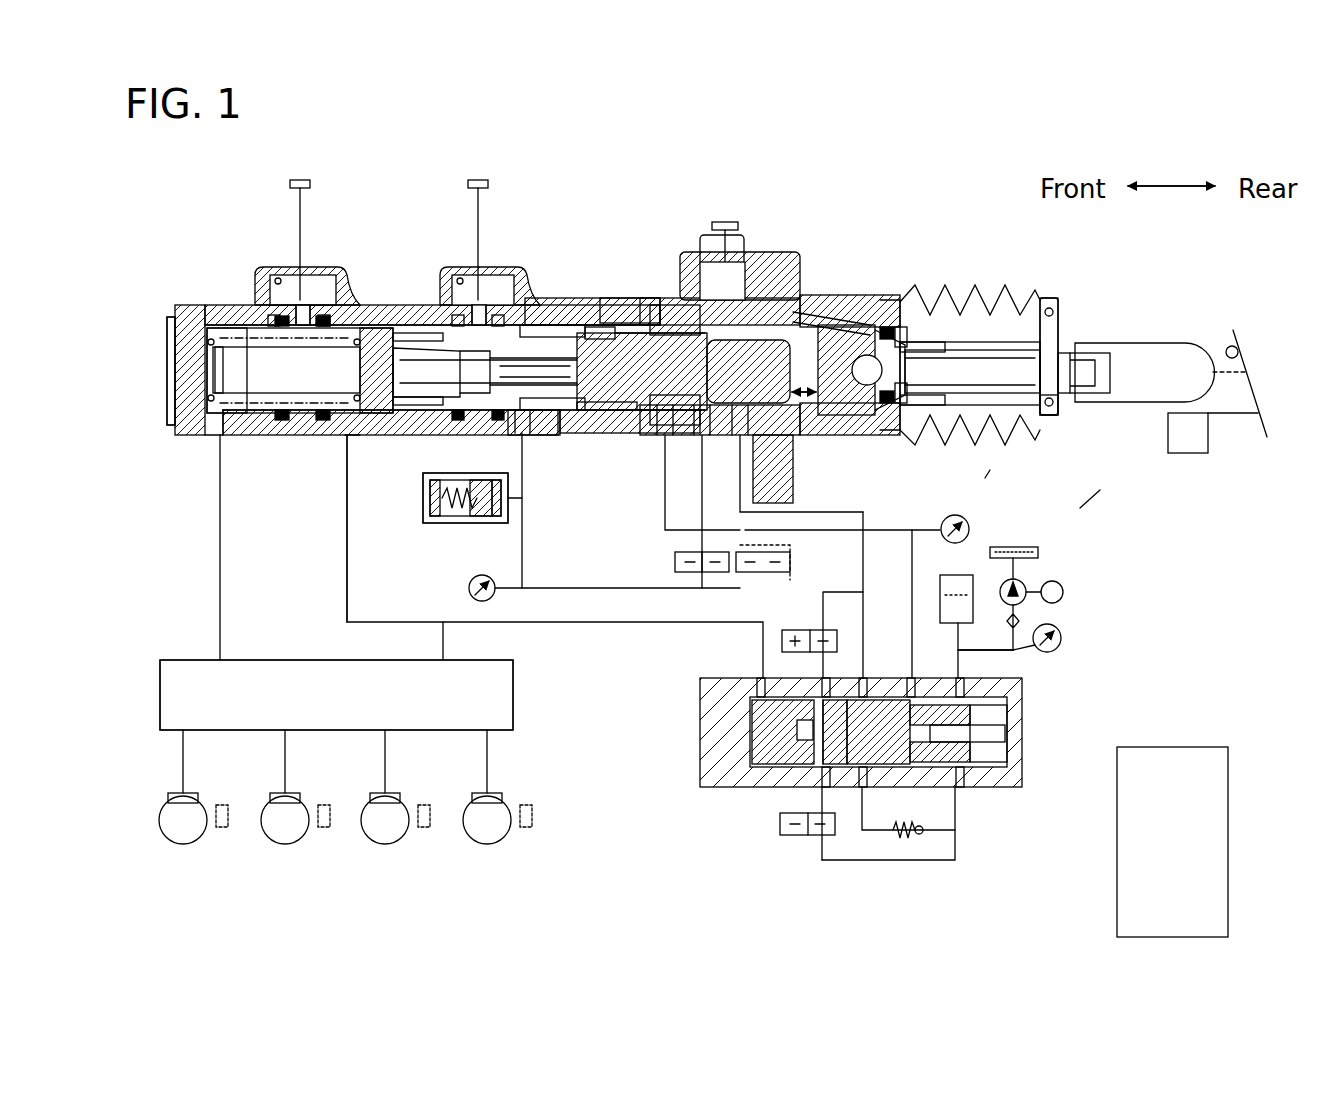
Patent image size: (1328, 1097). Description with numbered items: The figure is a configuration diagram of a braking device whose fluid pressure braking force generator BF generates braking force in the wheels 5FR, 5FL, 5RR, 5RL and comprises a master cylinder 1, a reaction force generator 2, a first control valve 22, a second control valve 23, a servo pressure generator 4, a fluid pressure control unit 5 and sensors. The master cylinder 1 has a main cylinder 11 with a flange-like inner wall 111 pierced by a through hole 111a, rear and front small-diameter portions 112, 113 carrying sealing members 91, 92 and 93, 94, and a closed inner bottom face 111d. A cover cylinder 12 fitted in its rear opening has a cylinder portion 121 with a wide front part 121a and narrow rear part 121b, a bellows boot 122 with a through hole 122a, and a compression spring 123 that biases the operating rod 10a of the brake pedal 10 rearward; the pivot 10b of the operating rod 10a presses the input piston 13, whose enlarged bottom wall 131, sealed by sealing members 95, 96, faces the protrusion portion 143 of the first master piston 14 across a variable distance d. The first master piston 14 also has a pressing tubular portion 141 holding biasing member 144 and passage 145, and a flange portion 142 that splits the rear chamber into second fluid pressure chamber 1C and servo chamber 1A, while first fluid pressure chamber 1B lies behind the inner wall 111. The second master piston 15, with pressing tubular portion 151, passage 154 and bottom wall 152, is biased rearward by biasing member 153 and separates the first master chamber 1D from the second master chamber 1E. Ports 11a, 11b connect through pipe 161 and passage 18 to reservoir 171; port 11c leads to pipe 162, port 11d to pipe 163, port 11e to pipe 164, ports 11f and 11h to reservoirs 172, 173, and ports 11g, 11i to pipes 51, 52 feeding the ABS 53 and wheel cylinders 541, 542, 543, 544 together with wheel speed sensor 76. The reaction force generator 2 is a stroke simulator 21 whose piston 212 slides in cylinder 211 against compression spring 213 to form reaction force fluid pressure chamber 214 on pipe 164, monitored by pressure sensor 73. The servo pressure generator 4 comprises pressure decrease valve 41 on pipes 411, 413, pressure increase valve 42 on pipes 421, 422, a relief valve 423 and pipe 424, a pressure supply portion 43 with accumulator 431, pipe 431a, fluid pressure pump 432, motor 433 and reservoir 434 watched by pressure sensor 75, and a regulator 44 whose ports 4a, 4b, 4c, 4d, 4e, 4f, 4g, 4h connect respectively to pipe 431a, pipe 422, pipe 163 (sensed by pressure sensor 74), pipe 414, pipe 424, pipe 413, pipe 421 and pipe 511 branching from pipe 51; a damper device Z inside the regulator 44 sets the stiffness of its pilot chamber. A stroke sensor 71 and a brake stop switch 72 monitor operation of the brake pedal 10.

The master cylinder 1 is at (158, 322).
The fluid pressure braking force generator BF is at (152, 212).
The main cylinder 11 is at (205, 303).
The inner wall 111 is at (668, 320).
The through hole 111a is at (641, 300).
The inner bottom face 111d is at (173, 405).
The small-diameter portion 112 is at (512, 425).
The small-diameter portion 113 is at (334, 420).
The port 11a is at (716, 440).
The port 11b is at (758, 300).
The port 11c is at (692, 440).
The port 11d is at (641, 437).
The port 11e is at (537, 435).
The port 11f is at (478, 312).
The port 11g is at (352, 440).
The port 11h is at (302, 312).
The port 11i is at (210, 435).
The cover cylinder 12 is at (1030, 520).
The cylinder portion 121 is at (975, 514).
The front part 121a is at (890, 435).
The rear part 121b is at (925, 440).
The boot 122 is at (1045, 440).
The through hole 122a is at (1060, 335).
The compression spring 123 is at (1052, 440).
The input piston 13 is at (935, 358).
The bottom wall 131 is at (906, 345).
The first master piston 14 is at (586, 402).
The pressing tubular portion 141 is at (545, 345).
The flange portion 142 is at (596, 358).
The protrusion portion 143 is at (846, 330).
The biasing member 144 is at (406, 325).
The passage 145 is at (440, 345).
The second master piston 15 is at (362, 345).
The pressing tubular portion 151 is at (292, 422).
The bottom wall 152 is at (386, 420).
The biasing member 153 is at (225, 328).
The passage 154 is at (285, 308).
The pipe 161 is at (793, 492).
The pipe 162 is at (702, 500).
The pipe 163 is at (665, 503).
The pipe 164 is at (522, 495).
The reservoir 171 is at (725, 231).
The reservoir 172 is at (478, 228).
The reservoir 173 is at (300, 228).
The passage 18 is at (868, 328).
The servo chamber 1A is at (640, 405).
The first fluid pressure chamber 1B is at (832, 420).
The second fluid pressure chamber 1C is at (606, 412).
The first master chamber 1D is at (451, 493).
The second master chamber 1E is at (242, 432).
The reaction force generator 2 is at (440, 562).
The stroke simulator 21 is at (440, 475).
The cylinder 211 is at (460, 473).
The piston 212 is at (468, 506).
The compression spring 213 is at (445, 503).
The reaction force fluid pressure chamber 214 is at (488, 506).
The first control valve 22 is at (678, 556).
The second control valve 23 is at (738, 556).
The servo pressure generator 4 is at (1035, 700).
The pressure decrease valve 41 is at (786, 630).
The pipe 411 is at (823, 592).
The pipe 413 is at (822, 670).
The pipe 414 is at (865, 615).
The pressure increase valve 42 is at (780, 830).
The pipe 421 is at (822, 792).
The pipe 422 is at (845, 862).
The relief valve 423 is at (905, 832).
The pipe 424 is at (862, 822).
The pressure supply portion 43 is at (1105, 590).
The accumulator 431 is at (950, 645).
The pipe 431a is at (975, 650).
The fluid pressure pump 432 is at (945, 595).
The motor 433 is at (1064, 586).
The reservoir 434 is at (1040, 552).
The regulator 44 is at (1022, 772).
The port 4a is at (962, 680).
The port 4b is at (962, 788).
The output port 4c is at (914, 680).
The port 4d is at (866, 680).
The port 4e is at (862, 788).
The port 4f is at (830, 680).
The port 4g is at (828, 787).
The port 4h is at (757, 680).
The fluid pressure control unit 5 is at (138, 625).
The pipe 51 is at (347, 575).
The pipe 511 is at (683, 622).
The pipe 52 is at (218, 580).
The ABS 53 is at (298, 660).
The wheel cylinder 541 is at (198, 800).
The wheel cylinder 542 is at (300, 800).
The wheel cylinder 543 is at (400, 800).
The wheel cylinder 544 is at (502, 800).
The wheel 5FR is at (160, 832).
The wheel 5FL is at (292, 845).
The wheel 5RR is at (392, 845).
The wheel 5RL is at (494, 845).
The stroke sensor 71 is at (1188, 455).
The brake stop switch 72 is at (1228, 348).
The pressure sensor 73 is at (488, 580).
The pressure sensor 74 is at (945, 535).
The pressure sensor 75 is at (1058, 650).
The wheel speed sensor 76 is at (228, 822).
The sealing member 91 is at (498, 318).
The sealing member 92 is at (458, 318).
The sealing member 93 is at (322, 313).
The sealing member 94 is at (272, 313).
The sealing member 95 is at (898, 320).
The sealing member 96 is at (958, 300).
The brake pedal 10 is at (1243, 340).
The operating rod 10a is at (1002, 375).
The pivot 10b is at (1000, 345).
The damper device Z is at (795, 731).
The distance d is at (804, 378).